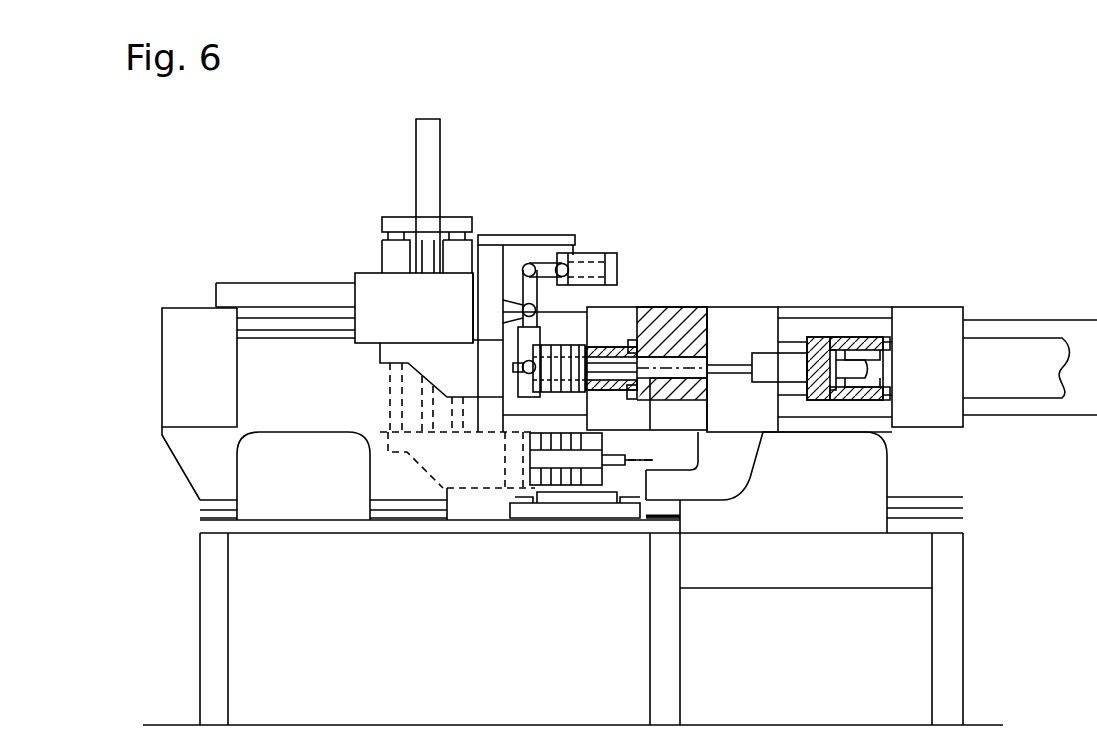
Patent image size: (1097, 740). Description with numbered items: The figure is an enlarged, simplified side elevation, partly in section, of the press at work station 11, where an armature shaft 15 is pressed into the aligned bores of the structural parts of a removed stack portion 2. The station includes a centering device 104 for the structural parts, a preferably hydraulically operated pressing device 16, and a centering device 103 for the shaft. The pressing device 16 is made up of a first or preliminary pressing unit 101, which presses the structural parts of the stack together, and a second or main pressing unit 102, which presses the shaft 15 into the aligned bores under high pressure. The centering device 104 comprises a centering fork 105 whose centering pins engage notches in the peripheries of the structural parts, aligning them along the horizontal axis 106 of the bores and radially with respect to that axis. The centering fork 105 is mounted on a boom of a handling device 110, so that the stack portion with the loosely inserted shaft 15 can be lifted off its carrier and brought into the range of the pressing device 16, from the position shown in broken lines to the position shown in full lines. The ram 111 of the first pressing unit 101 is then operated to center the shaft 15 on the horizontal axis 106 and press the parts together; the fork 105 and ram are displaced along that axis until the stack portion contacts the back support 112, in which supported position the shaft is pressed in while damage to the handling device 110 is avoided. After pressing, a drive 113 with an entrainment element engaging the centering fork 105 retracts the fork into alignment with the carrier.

The removed stack portion 2 is at (558, 364).
The work station 11 is at (385, 560).
The armature shaft 15 is at (633, 342).
The pressing device 16 is at (776, 287).
The first or preliminary pressing unit 101 is at (694, 302).
The second or main pressing unit 102 is at (815, 305).
The centering device for the shaft 103 is at (617, 347).
The centering device for the structural parts 104 is at (450, 360).
The centering fork 105 is at (558, 390).
The horizontal axis 106 is at (670, 364).
The handling device 110 is at (396, 215).
The ram 111 is at (640, 398).
The back support 112 is at (489, 270).
The drive 113 is at (543, 260).